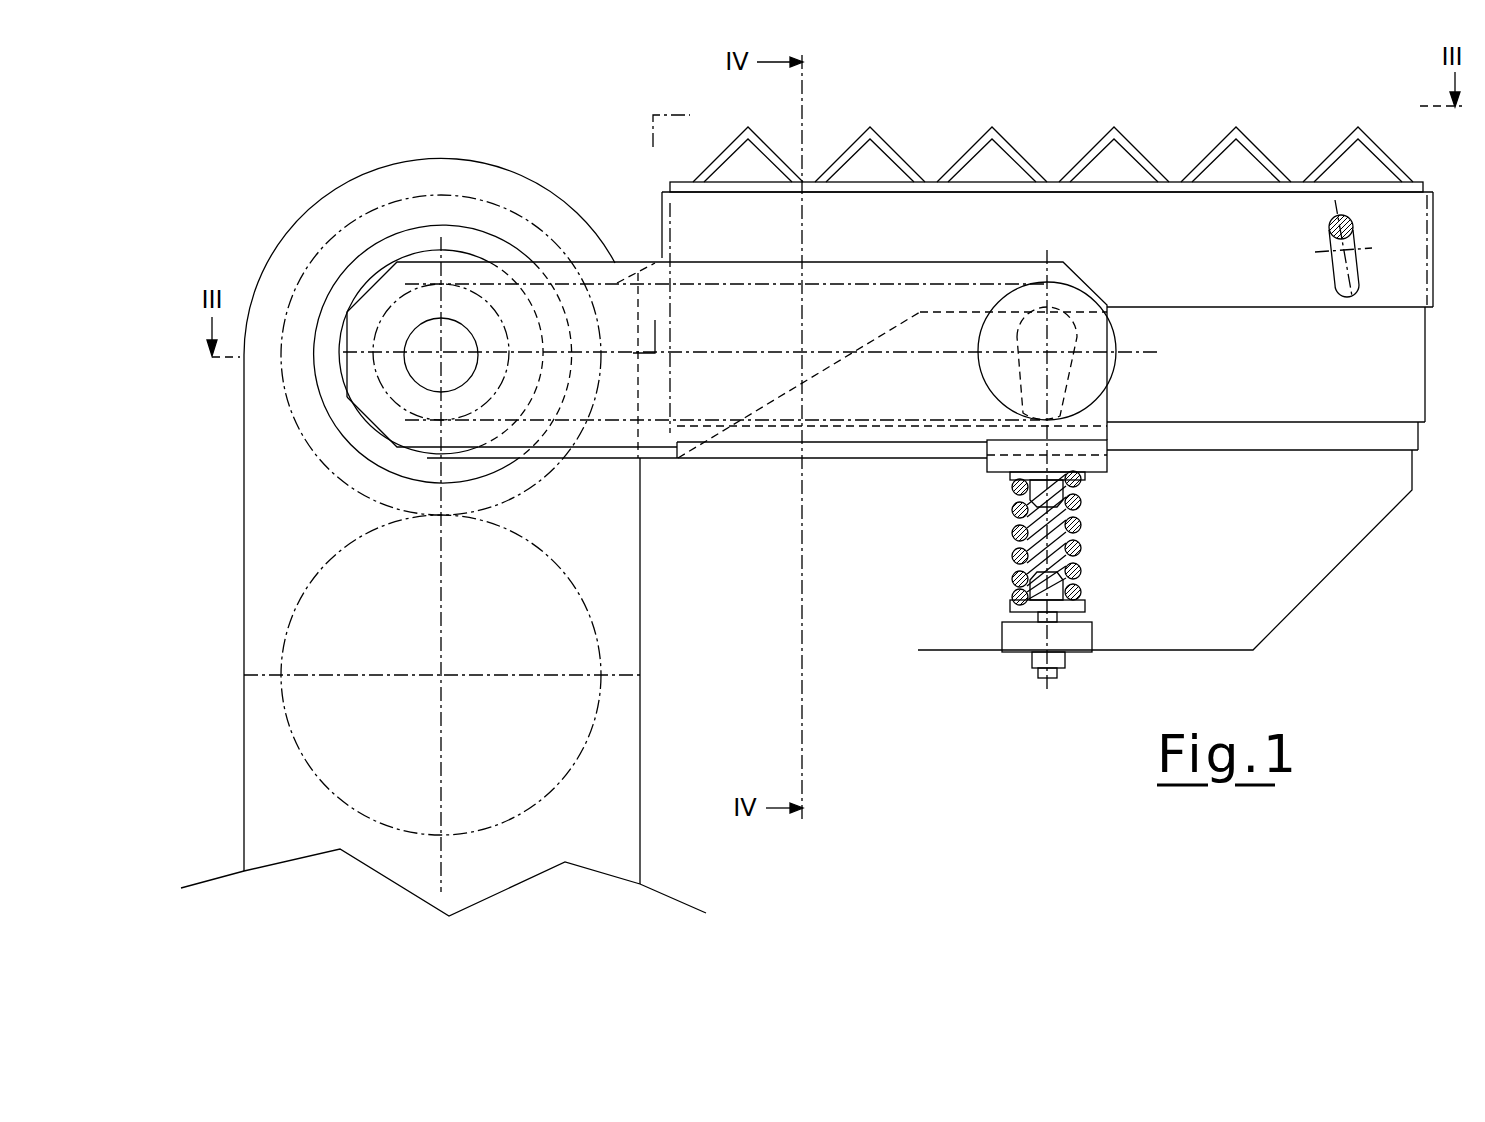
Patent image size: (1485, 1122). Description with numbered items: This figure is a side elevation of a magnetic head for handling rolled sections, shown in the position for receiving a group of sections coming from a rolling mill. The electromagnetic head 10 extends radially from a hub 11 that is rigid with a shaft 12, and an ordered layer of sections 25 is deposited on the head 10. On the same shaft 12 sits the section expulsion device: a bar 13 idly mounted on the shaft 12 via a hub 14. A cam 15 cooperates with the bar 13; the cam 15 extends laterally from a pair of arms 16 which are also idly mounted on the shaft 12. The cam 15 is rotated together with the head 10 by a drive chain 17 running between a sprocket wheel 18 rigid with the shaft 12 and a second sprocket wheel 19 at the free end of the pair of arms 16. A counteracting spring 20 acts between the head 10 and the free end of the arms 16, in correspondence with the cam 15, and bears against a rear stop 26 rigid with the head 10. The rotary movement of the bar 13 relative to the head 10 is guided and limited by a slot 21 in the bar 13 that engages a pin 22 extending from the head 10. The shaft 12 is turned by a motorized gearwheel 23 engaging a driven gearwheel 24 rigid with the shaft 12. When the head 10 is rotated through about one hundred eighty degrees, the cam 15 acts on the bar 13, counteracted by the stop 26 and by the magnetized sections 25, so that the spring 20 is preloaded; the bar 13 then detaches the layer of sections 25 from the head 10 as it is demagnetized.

The electromagnetic head 10 is at (1404, 355).
The hub 11 is at (343, 287).
The shaft 12 is at (422, 367).
The bar 13 is at (1222, 210).
The hub 14 is at (427, 254).
The cam 15 is at (1060, 390).
The pair of arms 16 is at (943, 268).
The drive chain 17 is at (833, 282).
The sprocket wheel 18 is at (515, 366).
The sprocket wheel 19 is at (1117, 345).
The counteracting spring 20 is at (1081, 520).
The slot 21 is at (1336, 272).
The pin 22 is at (1329, 226).
The motorized gearwheel 23 is at (597, 617).
The driven gearwheel 24 is at (473, 198).
The sections 25 is at (1146, 147).
The rear stop 26 is at (1008, 636).